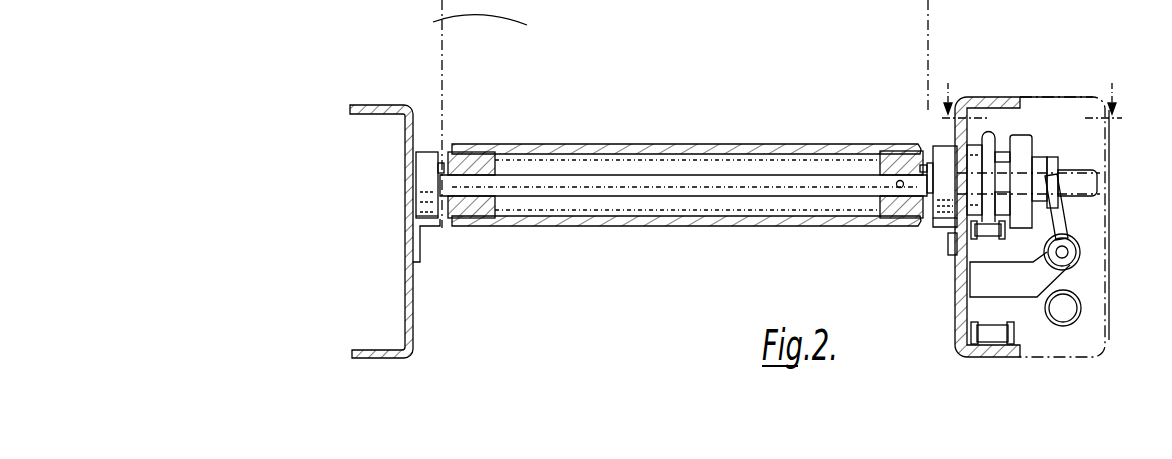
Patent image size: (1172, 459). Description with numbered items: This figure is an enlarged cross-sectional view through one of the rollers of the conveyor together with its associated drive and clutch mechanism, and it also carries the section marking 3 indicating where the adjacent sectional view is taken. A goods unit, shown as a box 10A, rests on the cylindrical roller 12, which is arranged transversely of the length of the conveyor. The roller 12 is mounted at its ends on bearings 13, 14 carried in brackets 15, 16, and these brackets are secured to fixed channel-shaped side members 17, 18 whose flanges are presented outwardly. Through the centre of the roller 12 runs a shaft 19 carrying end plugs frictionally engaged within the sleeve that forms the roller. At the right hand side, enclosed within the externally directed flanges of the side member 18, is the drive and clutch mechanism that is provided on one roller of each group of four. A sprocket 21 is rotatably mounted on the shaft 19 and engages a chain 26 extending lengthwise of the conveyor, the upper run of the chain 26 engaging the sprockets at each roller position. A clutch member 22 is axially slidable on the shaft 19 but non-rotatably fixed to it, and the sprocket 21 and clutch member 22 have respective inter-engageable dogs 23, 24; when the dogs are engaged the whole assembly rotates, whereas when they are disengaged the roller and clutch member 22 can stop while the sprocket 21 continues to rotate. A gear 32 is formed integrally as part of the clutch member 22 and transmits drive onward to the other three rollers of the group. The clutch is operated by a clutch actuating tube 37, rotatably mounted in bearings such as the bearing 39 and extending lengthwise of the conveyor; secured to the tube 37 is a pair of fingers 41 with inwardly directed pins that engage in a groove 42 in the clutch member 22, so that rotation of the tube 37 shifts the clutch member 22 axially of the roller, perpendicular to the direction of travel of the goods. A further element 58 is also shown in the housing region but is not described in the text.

The box 10A is at (440, 22).
The roller 12 is at (552, 143).
The bearing 13 is at (430, 160).
The bearing 14 is at (940, 147).
The bracket 15 is at (427, 228).
The bracket 16 is at (943, 222).
The side member 17 is at (372, 116).
The side member 18 is at (988, 97).
The shaft 19 is at (722, 178).
The sprocket 21 is at (974, 213).
The clutch member 22 is at (1042, 160).
The dog 23 is at (1025, 148).
The dog 24 is at (950, 240).
The chain 26 is at (1008, 236).
The gear 32 is at (1037, 142).
The clutch actuating tube 37 is at (1081, 250).
The bearing 39 is at (998, 290).
The finger 41 is at (1058, 220).
The groove 42 is at (1098, 171).
The roller 58 is at (1082, 307).
The section line 3- 3 is at (1032, 87).